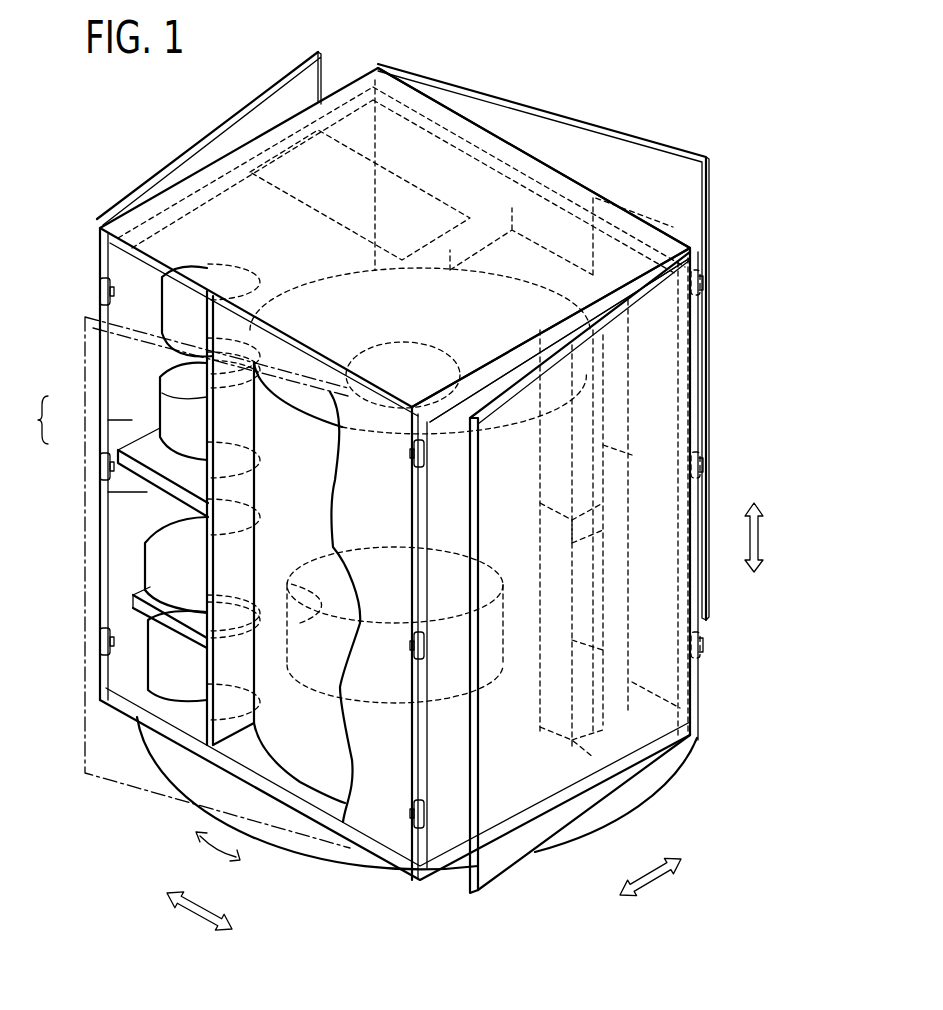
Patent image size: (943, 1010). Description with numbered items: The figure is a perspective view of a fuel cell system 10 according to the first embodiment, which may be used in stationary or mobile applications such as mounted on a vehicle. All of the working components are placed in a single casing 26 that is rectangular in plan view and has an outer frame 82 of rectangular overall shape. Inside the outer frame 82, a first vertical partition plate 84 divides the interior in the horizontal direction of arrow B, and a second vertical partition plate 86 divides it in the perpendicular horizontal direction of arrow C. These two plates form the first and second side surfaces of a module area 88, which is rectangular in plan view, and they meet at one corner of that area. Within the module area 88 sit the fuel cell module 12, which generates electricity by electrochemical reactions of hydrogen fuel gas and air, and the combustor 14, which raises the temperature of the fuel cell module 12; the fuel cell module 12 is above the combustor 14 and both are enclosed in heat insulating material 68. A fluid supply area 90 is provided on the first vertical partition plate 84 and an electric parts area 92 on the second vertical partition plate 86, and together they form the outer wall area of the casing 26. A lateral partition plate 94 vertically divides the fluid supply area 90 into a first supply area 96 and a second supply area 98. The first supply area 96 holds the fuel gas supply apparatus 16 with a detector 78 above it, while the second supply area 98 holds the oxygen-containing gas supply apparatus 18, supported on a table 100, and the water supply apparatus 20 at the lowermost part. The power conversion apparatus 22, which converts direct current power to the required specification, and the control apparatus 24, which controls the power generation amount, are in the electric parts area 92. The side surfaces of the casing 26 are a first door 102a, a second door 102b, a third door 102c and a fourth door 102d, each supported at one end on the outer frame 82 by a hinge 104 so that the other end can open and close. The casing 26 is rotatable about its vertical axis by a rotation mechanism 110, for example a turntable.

The fuel cell system 10 is at (151, 112).
The fuel cell module 12 is at (450, 532).
The combustor 14 is at (377, 740).
The fuel gas supply apparatus 16 is at (176, 395).
The oxygen-containing gas supply apparatus 18 is at (173, 522).
The water supply apparatus 20 is at (157, 683).
The power conversion apparatus 22 is at (620, 643).
The control apparatus 24 is at (620, 452).
The casing 26 is at (466, 108).
The heat insulating material 68 is at (273, 700).
The detector 78 is at (172, 313).
The outer frame 82 is at (488, 370).
The first vertical partition plate 84 is at (210, 601).
The second vertical partition plate 86 is at (628, 545).
The module area 88 is at (228, 340).
The fluid supply area 90 is at (28, 420).
The electric parts area 92 is at (600, 232).
The lateral partition plate 94 is at (207, 472).
The first supply area 96 is at (132, 420).
The second supply area 98 is at (147, 492).
The table 100 is at (187, 637).
The first door 102a is at (500, 875).
The second door 102b is at (125, 767).
The third door 102c is at (260, 113).
The fourth door 102d is at (603, 153).
The hinge 104 is at (98, 288).
The rotation mechanism 110 is at (295, 848).